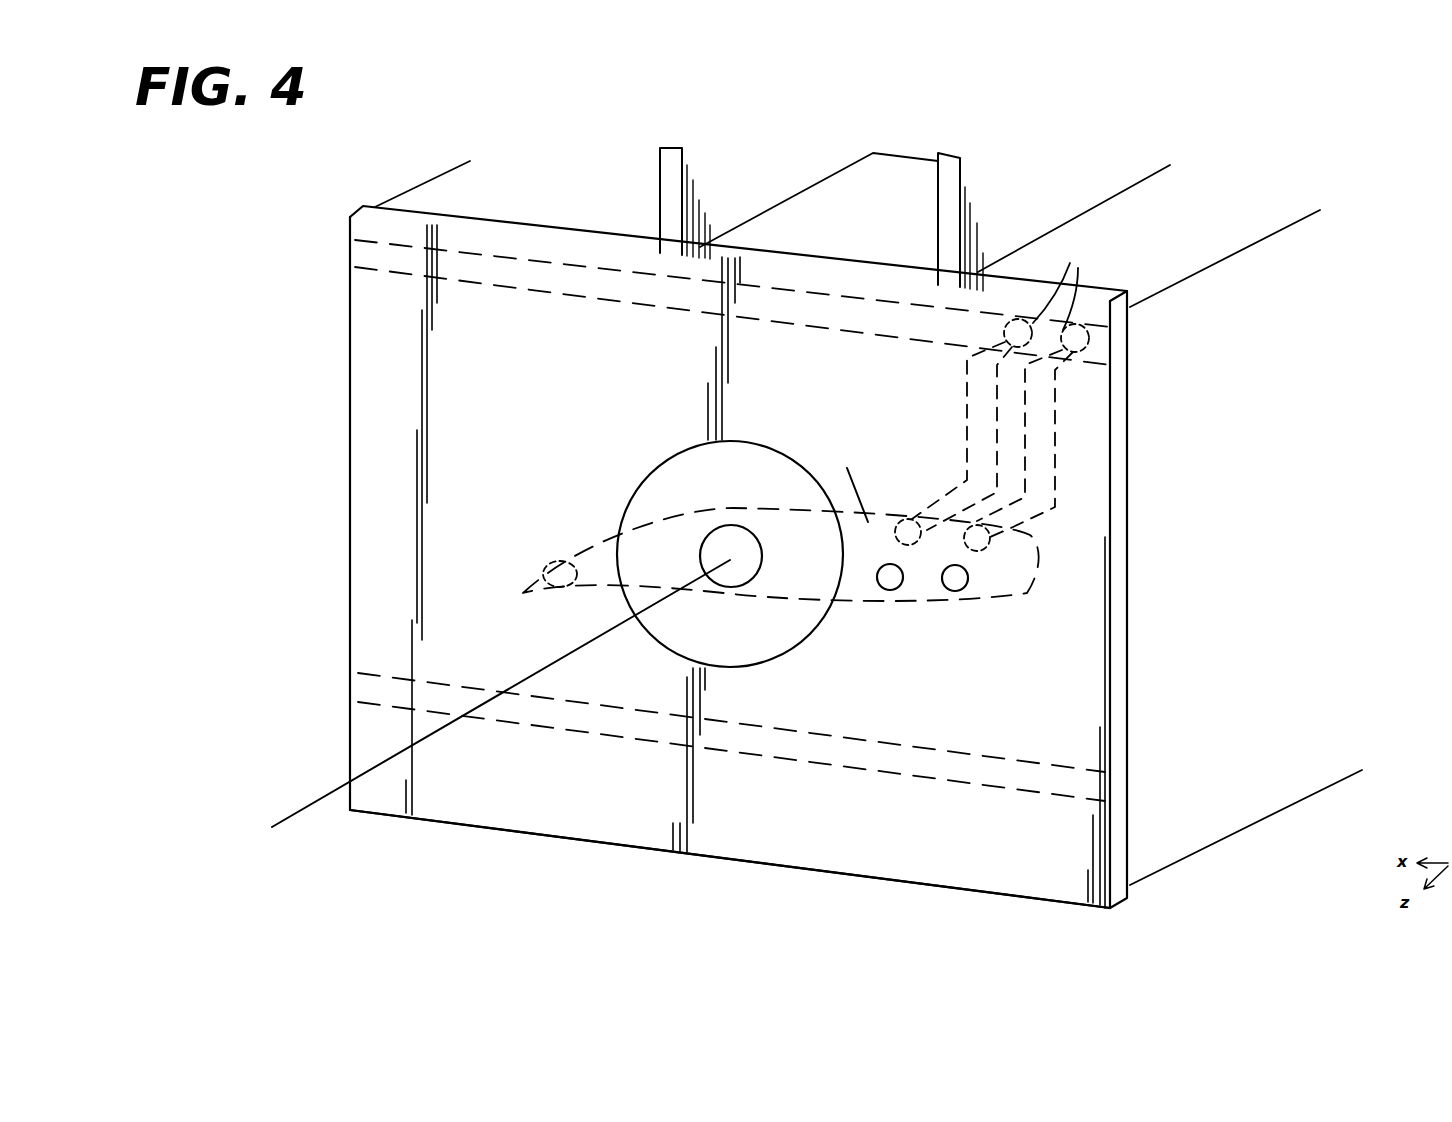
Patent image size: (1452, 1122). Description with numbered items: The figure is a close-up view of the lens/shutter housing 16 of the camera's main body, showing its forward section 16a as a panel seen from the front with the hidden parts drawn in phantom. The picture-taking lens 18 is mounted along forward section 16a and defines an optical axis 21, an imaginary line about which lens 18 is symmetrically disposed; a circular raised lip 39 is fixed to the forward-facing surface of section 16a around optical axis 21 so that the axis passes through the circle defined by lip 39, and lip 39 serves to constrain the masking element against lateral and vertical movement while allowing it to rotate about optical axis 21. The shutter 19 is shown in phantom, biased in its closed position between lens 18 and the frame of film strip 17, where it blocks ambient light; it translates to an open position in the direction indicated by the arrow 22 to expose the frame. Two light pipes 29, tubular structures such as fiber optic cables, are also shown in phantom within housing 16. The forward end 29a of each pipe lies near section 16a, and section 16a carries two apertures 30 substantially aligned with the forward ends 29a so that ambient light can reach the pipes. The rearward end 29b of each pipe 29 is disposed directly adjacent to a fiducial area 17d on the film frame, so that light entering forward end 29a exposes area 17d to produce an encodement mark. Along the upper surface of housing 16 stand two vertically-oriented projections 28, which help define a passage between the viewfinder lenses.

The lens/shutter housing 16 is at (338, 263).
The forward section of lens/shutter housing 16a is at (978, 872).
The film strip 17 is at (357, 343).
The fiducial area 17d is at (1073, 280).
The picture-taking lens 18 is at (735, 530).
The shutter 19 is at (582, 530).
The optical axis 21 is at (285, 812).
The arrow 22 is at (845, 485).
The vertically-oriented projections 28 is at (658, 188).
The light pipes 29 is at (967, 422).
The forward end of light pipe 29a is at (910, 519).
The rearward end of light pipe 29b is at (1005, 328).
The apertures 30 is at (947, 593).
The circular raised lip 39 is at (653, 468).